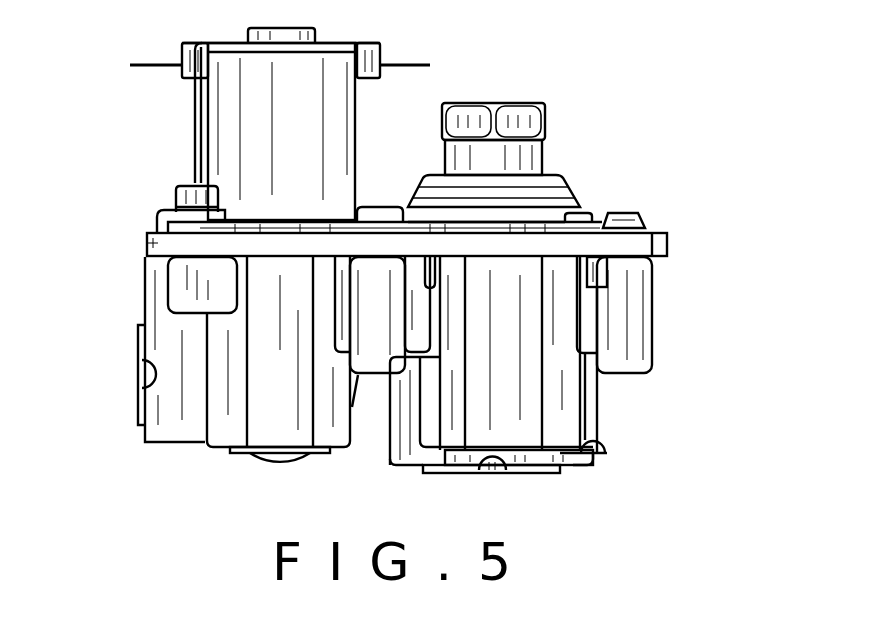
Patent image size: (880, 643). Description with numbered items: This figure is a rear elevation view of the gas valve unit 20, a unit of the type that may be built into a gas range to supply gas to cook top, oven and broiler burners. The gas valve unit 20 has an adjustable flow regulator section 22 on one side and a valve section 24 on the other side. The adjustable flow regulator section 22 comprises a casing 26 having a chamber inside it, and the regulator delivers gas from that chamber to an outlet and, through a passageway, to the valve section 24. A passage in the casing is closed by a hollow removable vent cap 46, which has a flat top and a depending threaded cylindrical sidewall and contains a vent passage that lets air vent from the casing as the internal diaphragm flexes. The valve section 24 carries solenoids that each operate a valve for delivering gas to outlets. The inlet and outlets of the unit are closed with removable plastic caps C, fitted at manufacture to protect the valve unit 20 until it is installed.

The gas valve unit 20 is at (623, 157).
The adjustable flow regulator section 22 is at (512, 285).
The valve section 24 is at (193, 245).
The casing 26 is at (642, 216).
The vent cap 46 is at (528, 123).
The removable plastic caps C is at (532, 475).